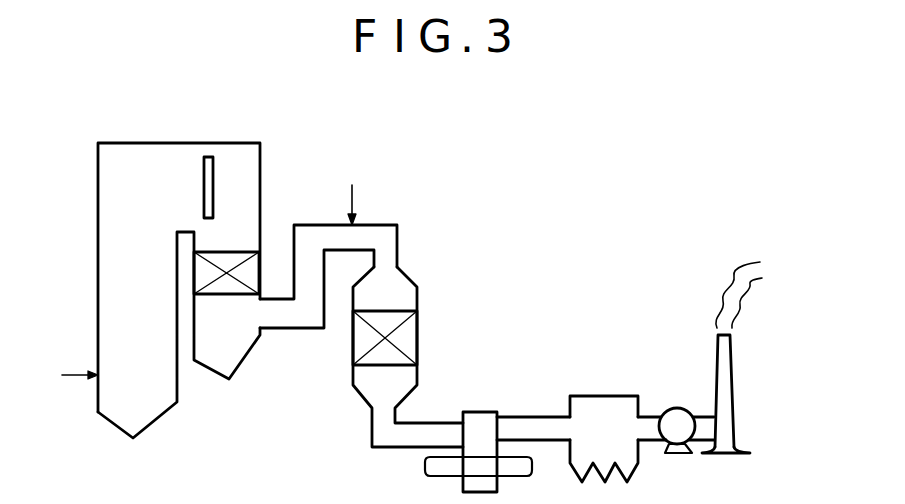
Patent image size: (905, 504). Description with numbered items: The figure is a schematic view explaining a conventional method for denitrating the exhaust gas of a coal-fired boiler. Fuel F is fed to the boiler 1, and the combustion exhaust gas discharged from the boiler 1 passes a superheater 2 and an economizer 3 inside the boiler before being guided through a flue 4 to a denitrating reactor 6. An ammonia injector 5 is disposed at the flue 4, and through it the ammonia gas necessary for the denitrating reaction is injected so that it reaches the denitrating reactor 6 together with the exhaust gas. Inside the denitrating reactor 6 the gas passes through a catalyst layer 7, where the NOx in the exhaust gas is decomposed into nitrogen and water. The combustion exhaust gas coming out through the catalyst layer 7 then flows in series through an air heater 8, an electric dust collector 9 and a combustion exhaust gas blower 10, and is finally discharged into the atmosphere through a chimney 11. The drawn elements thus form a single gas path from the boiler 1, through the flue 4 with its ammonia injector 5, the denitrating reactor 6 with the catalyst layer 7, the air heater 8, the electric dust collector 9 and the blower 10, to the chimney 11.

The boiler 1 is at (98, 237).
The superheater 2 is at (214, 170).
The economizer 3 is at (253, 278).
The flue 4 is at (310, 225).
The ammonia injector 5 is at (353, 200).
The denitrating reactor 6 is at (402, 285).
The catalyst layer 7 is at (410, 342).
The air heater 8 is at (485, 412).
The electric dust collector 9 is at (610, 403).
The combustion exhaust gas blower 10 is at (679, 413).
The chimney 11 is at (727, 377).
The fuel F is at (70, 370).